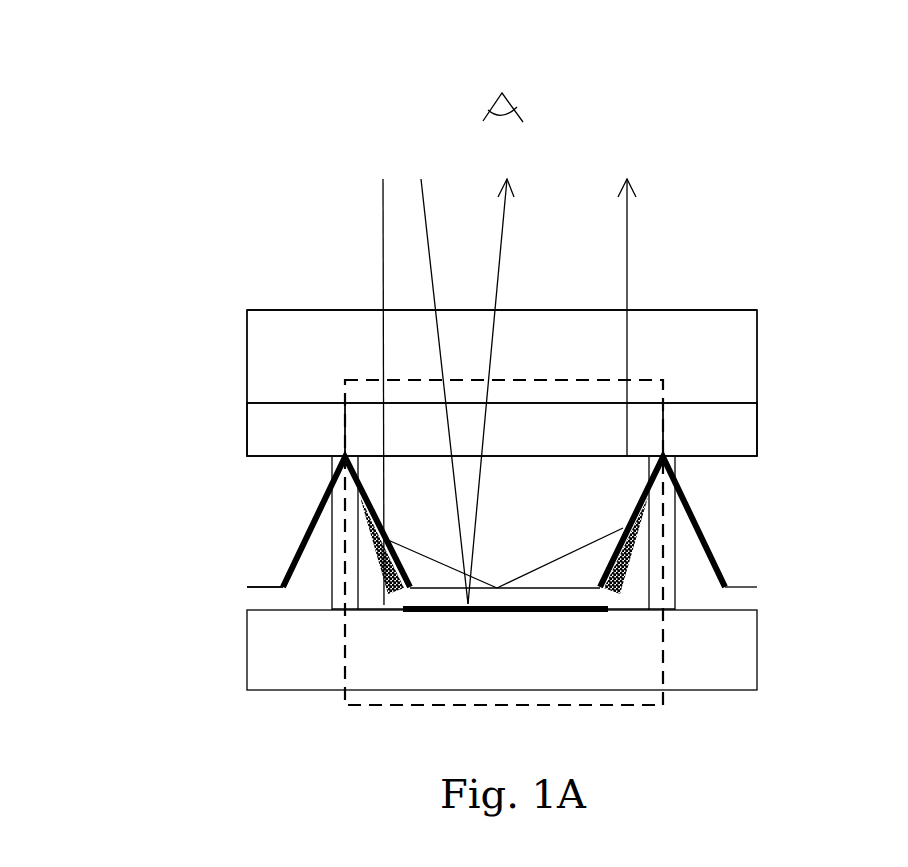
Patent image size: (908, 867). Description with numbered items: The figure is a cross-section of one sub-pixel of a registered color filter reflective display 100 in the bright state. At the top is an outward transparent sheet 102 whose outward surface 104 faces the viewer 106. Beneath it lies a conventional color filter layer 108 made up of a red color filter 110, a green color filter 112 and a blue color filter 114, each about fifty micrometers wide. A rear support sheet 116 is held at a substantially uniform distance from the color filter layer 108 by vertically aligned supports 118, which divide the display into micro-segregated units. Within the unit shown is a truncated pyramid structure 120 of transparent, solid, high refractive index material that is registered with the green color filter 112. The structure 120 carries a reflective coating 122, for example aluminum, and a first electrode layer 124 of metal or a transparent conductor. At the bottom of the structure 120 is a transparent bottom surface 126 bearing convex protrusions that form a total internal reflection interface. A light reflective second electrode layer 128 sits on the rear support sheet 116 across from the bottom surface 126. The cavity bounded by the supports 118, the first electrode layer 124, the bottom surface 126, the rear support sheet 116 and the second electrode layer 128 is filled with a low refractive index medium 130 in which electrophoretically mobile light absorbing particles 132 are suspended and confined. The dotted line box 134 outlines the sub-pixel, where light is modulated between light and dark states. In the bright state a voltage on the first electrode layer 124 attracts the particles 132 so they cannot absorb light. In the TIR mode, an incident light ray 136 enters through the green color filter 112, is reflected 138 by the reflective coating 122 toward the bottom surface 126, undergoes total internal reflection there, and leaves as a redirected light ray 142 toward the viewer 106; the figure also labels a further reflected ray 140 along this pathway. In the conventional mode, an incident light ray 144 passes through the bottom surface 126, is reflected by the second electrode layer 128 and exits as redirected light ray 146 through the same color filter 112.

The display 100 is at (705, 273).
The outward transparent sheet 102 is at (580, 349).
The outward surface 104 is at (295, 310).
The viewer 106 is at (515, 108).
The color filter layer 108 is at (765, 403).
The red color filter 110 is at (315, 444).
The green color filter 112 is at (558, 432).
The blue color filter 114 is at (733, 444).
The rear support sheet 116 is at (305, 666).
The vertically aligned supports 118 is at (678, 598).
The truncated pyramid structure 120 is at (540, 501).
The reflective coating 122 is at (303, 541).
The first electrode layer 124 is at (303, 583).
The transparent bottom surface 126 is at (557, 587).
The second electrode layer 128 is at (487, 612).
The medium 130 is at (638, 600).
The electrophoretically mobile light absorbing particles 132 is at (393, 600).
The sub-pixel 134 is at (623, 707).
The incident light ray 136 is at (383, 257).
The reflected light ray 138 is at (415, 552).
The reflected ray right 140 is at (595, 543).
The redirected light ray 142 is at (627, 292).
The incident light ray 144 is at (432, 257).
The redirected light ray 146 is at (500, 272).